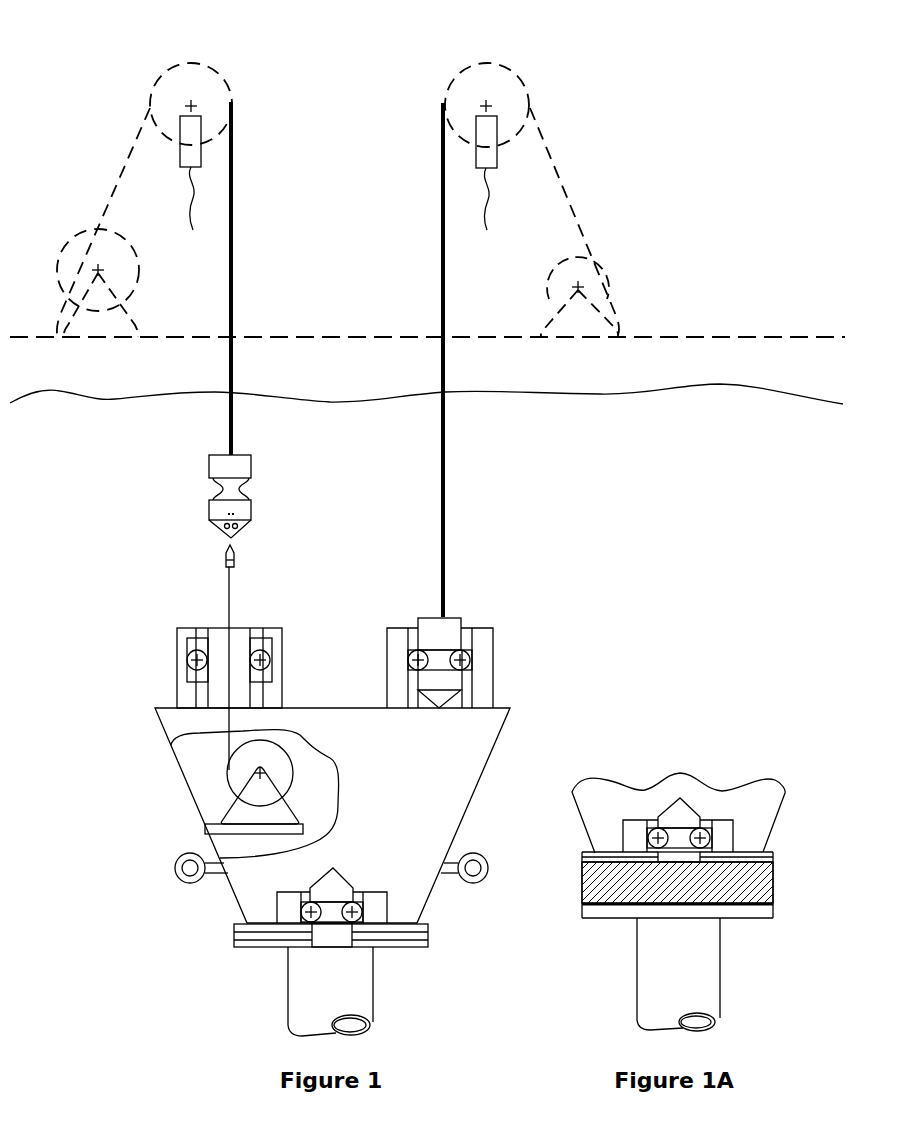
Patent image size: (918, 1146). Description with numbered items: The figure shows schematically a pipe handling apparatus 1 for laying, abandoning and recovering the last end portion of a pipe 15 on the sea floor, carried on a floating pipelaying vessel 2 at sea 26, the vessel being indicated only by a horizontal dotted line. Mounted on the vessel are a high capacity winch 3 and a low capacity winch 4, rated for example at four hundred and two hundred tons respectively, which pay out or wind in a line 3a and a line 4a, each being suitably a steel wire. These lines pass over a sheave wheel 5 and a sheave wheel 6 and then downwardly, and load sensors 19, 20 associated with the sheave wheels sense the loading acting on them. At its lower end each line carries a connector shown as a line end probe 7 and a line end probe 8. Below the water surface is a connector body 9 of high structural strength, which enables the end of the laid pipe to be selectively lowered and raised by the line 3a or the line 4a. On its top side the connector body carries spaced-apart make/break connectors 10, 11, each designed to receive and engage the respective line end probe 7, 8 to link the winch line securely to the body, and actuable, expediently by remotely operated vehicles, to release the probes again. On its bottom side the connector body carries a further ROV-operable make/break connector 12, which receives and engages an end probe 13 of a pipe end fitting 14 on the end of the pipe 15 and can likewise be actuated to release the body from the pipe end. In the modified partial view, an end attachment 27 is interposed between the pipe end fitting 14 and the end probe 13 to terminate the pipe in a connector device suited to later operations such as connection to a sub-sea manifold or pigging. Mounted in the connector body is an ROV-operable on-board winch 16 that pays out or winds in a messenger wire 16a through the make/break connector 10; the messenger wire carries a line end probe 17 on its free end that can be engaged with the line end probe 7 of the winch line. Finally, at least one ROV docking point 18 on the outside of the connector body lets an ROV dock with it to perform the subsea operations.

In FIG. 1, the pipe handling apparatus 1 is at (342, 815).
In FIG. 1, the vessel 2 is at (340, 334).
In FIG. 1, the high capacity winch 3 is at (118, 248).
In FIG. 1, the line 3a is at (105, 173).
In FIG. 1, the low capacity winch 4 is at (562, 318).
In FIG. 1, the line 4a is at (572, 197).
In FIG. 1, the sheave wheel 5 is at (212, 82).
In FIG. 1, the sheave wheel 6 is at (465, 82).
In FIG. 1, the line end probe 7 is at (229, 506).
In FIG. 1, the line end probe 8 is at (443, 633).
In FIG. 1, the connector body 9 is at (462, 744).
In FIG. 1A, the connector body 9 is at (678, 813).
In FIG. 1, the make/break connector 10 is at (181, 661).
In FIG. 1, the make/break connector 11 is at (480, 671).
In FIG. 1, the make/break connector 12 is at (285, 908).
In FIG. 1A, the make/break connector 12 is at (633, 835).
In FIG. 1, the end probe 13 is at (333, 931).
In FIG. 1A, the end probe 13 is at (680, 815).
In FIG. 1, the pipe end fitting 14 is at (400, 940).
In FIG. 1A, the pipe end fitting 14 is at (718, 912).
In FIG. 1, the pipe 15 is at (313, 977).
In FIG. 1A, the pipe 15 is at (686, 957).
In FIG. 1, the on-board winch 16 is at (252, 804).
In FIG. 1, the messenger wire 16a is at (228, 603).
In FIG. 1, the line end probe 17 is at (226, 558).
In FIG. 1, the ROV docking point 18 is at (177, 864).
In FIG. 1, the load sensor 19 is at (488, 152).
In FIG. 1, the load sensor 20 is at (188, 145).
In FIG. 1, the sea 26 is at (115, 398).
In FIG. 1A, the end attachment 27 is at (613, 887).